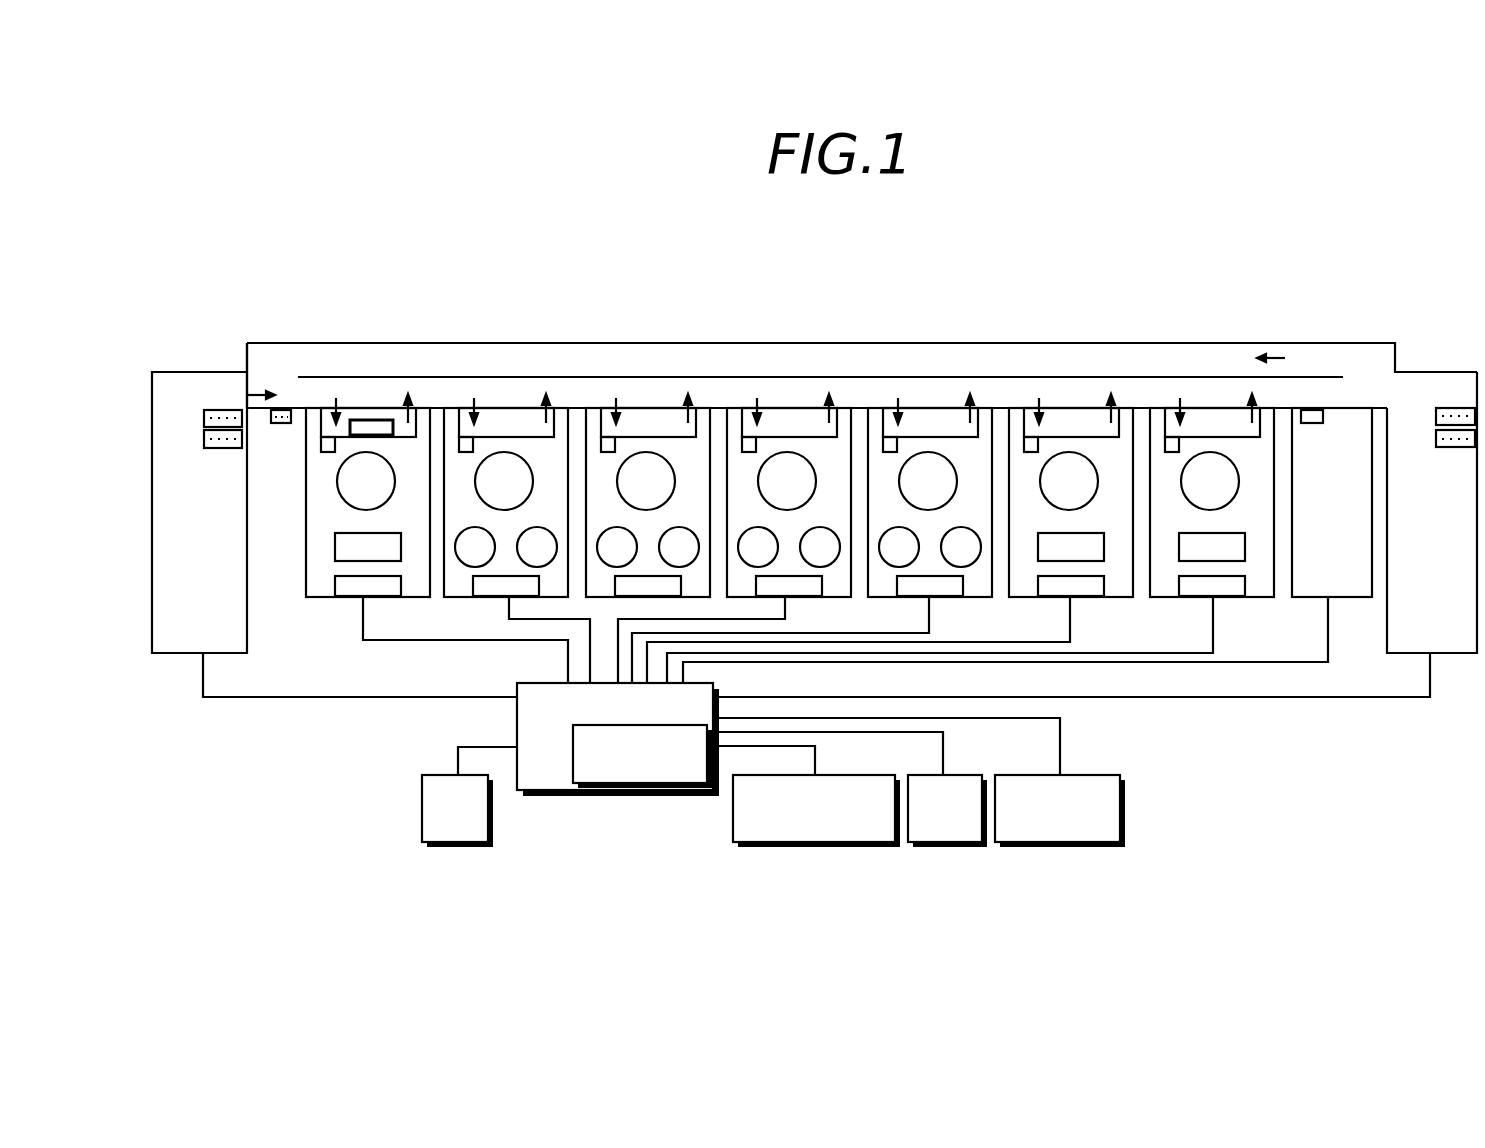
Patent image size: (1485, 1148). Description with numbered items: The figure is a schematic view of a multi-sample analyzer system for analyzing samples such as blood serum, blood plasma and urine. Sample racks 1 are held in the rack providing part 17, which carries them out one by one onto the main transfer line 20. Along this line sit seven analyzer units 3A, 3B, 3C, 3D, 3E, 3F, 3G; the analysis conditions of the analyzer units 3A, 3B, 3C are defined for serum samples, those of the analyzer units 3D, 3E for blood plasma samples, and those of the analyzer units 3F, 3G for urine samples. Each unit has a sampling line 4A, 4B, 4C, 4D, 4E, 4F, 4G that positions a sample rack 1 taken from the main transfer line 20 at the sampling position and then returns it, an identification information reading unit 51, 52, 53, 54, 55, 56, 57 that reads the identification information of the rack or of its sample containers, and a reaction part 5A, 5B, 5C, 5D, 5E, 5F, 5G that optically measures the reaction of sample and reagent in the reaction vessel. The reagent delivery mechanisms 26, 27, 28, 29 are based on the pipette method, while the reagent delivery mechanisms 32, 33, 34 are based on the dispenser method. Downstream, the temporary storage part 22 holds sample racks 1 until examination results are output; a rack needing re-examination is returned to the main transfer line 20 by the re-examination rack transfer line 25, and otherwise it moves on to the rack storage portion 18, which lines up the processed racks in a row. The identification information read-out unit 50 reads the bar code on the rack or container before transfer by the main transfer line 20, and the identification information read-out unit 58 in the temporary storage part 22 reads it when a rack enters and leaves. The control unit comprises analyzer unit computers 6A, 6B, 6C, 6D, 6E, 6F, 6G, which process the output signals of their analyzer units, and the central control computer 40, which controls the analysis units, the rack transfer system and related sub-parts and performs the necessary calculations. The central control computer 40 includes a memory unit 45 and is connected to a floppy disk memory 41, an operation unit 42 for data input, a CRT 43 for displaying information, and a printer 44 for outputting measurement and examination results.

The sample rack 1 is at (220, 448).
The rack providing part 17 is at (232, 562).
The rack storage portion 18 is at (1462, 640).
The main transfer line 20 is at (443, 390).
The temporary storage part 22 is at (1353, 598).
The re-examination rack transfer line 25 is at (1160, 370).
The reagent delivery mechanism 26 is at (483, 537).
The reagent delivery mechanism 27 is at (625, 537).
The reagent delivery mechanism 28 is at (766, 537).
The reagent delivery mechanism 29 is at (907, 537).
The reagent delivery mechanism 32 is at (376, 541).
The reagent delivery mechanism 33 is at (1079, 541).
The reagent delivery mechanism 34 is at (1220, 541).
The analyzer unit 3A is at (320, 585).
The analyzer unit 3B is at (458, 585).
The analyzer unit 3C is at (600, 590).
The analyzer unit 3D is at (738, 590).
The analyzer unit 3E is at (887, 590).
The analyzer unit 3F is at (1022, 585).
The analyzer unit 3G is at (1165, 585).
The sampling line 4A is at (365, 418).
The sampling line 4B is at (517, 418).
The sampling line 4C is at (660, 418).
The sampling line 4D is at (793, 418).
The sampling line 4E is at (940, 418).
The sampling line 4F is at (1075, 418).
The sampling line 4G is at (1215, 418).
The reaction part 5A is at (383, 470).
The reaction part 5B is at (521, 470).
The reaction part 5C is at (663, 470).
The reaction part 5D is at (804, 470).
The reaction part 5E is at (945, 470).
The reaction part 5F is at (1086, 470).
The reaction part 5G is at (1227, 470).
The analyzer unit computer 6A is at (392, 590).
The analyzer unit computer 6B is at (532, 590).
The analyzer unit computer 6C is at (668, 596).
The analyzer unit computer 6D is at (815, 596).
The analyzer unit computer 6E is at (953, 590).
The analyzer unit computer 6F is at (1095, 590).
The analyzer unit computer 6G is at (1236, 586).
The central control computer 40 is at (565, 796).
The floppy disk memory 41 is at (458, 848).
The operation unit 42 is at (811, 848).
The CRT 43 is at (940, 848).
The printer 44 is at (1065, 848).
The memory unit 45 is at (652, 796).
The identification information read-out unit 50 is at (281, 423).
The identification information reading unit 51 is at (327, 452).
The identification information reading unit 52 is at (466, 452).
The identification information reading unit 53 is at (608, 452).
The identification information reading unit 54 is at (749, 452).
The identification information reading unit 55 is at (890, 452).
The identification information reading unit 56 is at (1031, 452).
The identification information reading unit 57 is at (1172, 452).
The identification information read-out unit 58 is at (1312, 423).